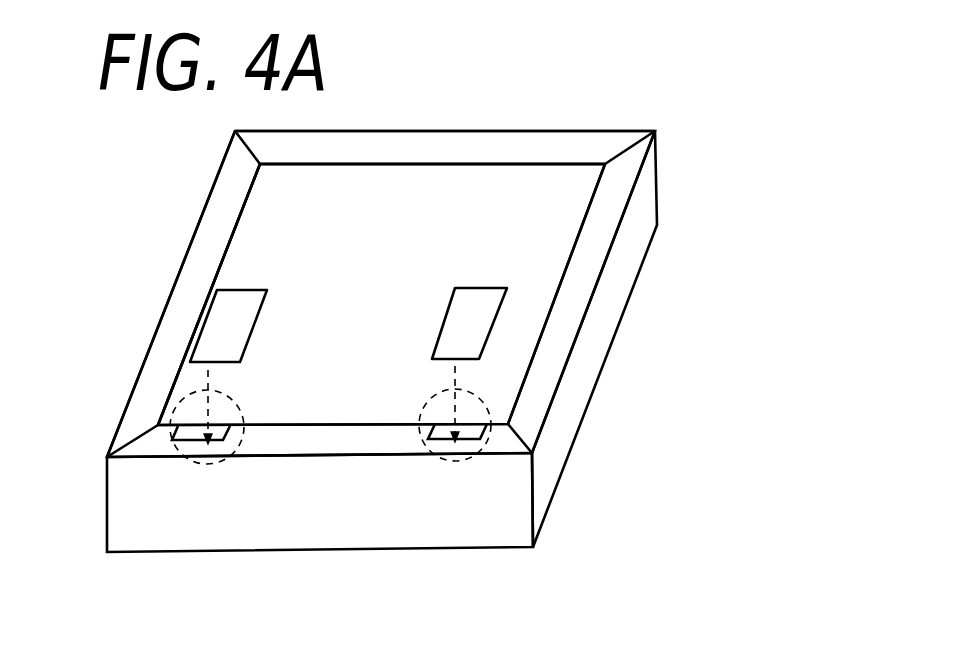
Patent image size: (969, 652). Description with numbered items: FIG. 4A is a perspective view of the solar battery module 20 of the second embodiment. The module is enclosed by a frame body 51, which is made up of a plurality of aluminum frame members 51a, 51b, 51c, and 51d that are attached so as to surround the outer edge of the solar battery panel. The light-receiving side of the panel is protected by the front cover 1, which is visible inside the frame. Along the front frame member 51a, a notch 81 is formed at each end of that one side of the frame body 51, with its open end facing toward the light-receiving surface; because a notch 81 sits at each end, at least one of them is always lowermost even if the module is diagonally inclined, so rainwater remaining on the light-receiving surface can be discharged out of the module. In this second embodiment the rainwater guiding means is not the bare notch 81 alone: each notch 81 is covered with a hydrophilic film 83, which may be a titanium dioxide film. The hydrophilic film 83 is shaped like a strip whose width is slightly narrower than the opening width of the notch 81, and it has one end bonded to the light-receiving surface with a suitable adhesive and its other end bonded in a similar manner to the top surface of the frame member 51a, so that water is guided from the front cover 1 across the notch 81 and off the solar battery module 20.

The solar battery module 20 is at (745, 78).
The frame body 51 is at (178, 305).
The frame member 51a is at (320, 523).
The frame member 51b is at (573, 402).
The frame member 51c is at (538, 145).
The frame member 51d is at (147, 370).
The front cover 1 is at (540, 260).
The hydrophilic film 83 is at (483, 318).
The notch 81 is at (472, 458).